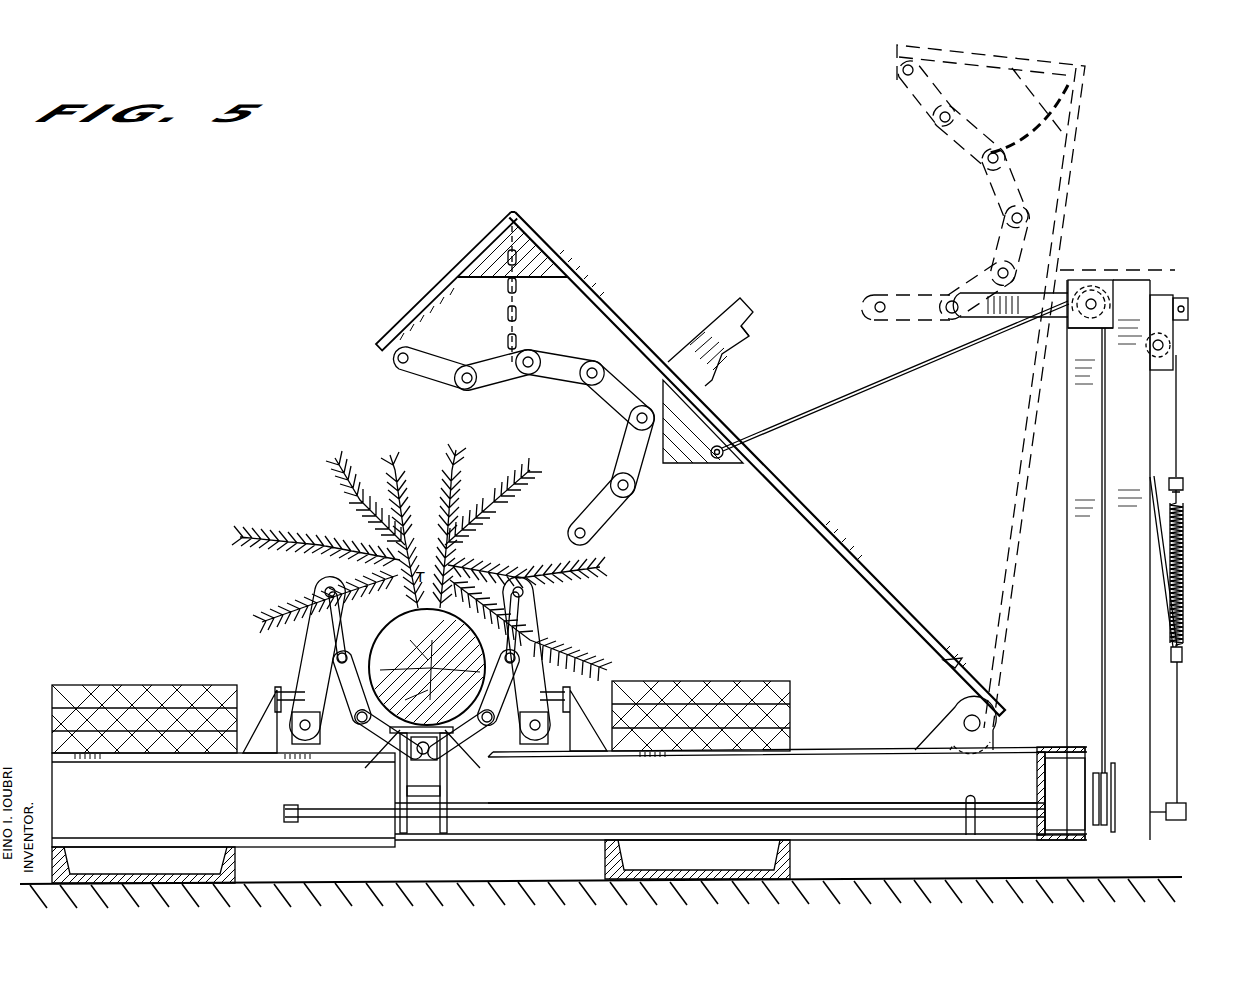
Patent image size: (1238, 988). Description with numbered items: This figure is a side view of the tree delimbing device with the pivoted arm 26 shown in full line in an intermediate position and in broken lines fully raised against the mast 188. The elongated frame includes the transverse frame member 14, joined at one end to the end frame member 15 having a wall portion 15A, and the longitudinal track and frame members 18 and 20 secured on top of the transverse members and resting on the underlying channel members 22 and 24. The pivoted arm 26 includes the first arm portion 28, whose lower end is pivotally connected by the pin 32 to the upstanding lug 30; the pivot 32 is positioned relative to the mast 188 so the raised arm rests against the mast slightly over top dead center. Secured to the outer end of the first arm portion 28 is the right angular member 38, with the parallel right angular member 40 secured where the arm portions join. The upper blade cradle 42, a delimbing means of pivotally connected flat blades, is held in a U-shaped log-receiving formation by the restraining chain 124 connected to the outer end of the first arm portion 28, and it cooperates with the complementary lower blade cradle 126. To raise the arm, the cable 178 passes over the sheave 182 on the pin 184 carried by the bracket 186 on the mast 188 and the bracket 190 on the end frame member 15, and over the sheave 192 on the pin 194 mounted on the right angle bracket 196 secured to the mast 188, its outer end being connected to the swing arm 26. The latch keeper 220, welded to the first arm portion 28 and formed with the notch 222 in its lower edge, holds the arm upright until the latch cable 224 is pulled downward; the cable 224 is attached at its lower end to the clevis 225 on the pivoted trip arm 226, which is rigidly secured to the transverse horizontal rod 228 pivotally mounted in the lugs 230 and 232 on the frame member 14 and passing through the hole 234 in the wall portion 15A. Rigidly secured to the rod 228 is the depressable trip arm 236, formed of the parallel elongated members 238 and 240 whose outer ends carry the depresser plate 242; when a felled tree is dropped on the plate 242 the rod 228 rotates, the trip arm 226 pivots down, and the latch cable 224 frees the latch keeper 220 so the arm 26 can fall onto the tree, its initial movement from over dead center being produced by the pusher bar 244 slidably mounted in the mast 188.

The transverse frame member 14 is at (835, 747).
The end frame member 15 is at (1043, 747).
The wall portion 15A is at (1033, 763).
The longitudinal track and frame member 18 is at (770, 680).
The longitudinal track and frame member 20 is at (77, 683).
The channel member 22 is at (798, 857).
The channel member 24 is at (240, 860).
The pivoted arm 26 is at (834, 517).
The first arm portion 28 is at (713, 407).
The upstanding lug 30 is at (935, 727).
The pin 32 is at (950, 710).
The right angular member 38 is at (442, 288).
The right angular member 40 is at (653, 488).
The upper blade cradle 42 is at (570, 388).
The restraining chain 124 is at (520, 258).
The lower blade cradle 126 is at (490, 620).
The cable 178 is at (878, 383).
The sheave 182 is at (1100, 772).
The pin 184 is at (1128, 830).
The bracket 186 is at (1113, 765).
The mast 188 is at (1062, 585).
The bracket 190 is at (1080, 768).
The sheave 192 is at (1090, 325).
The pin 194 is at (1093, 297).
The right angle bracket 196 is at (1120, 287).
The latch keeper 220 is at (723, 315).
The notch 222 is at (742, 332).
The latch cable 224 is at (1180, 297).
The clevis 225 is at (1147, 657).
The pivoted trip arm 226 is at (1173, 702).
The transverse horizontal rod 228 is at (855, 803).
The lug 230 is at (963, 830).
The lug 232 is at (282, 810).
The hole 234 is at (1040, 822).
The depressable trip arm 236 is at (452, 792).
The elongated member 238 is at (455, 830).
The elongated member 240 is at (390, 830).
The depresser plate 242 is at (397, 743).
The pusher bar 244 is at (1030, 263).